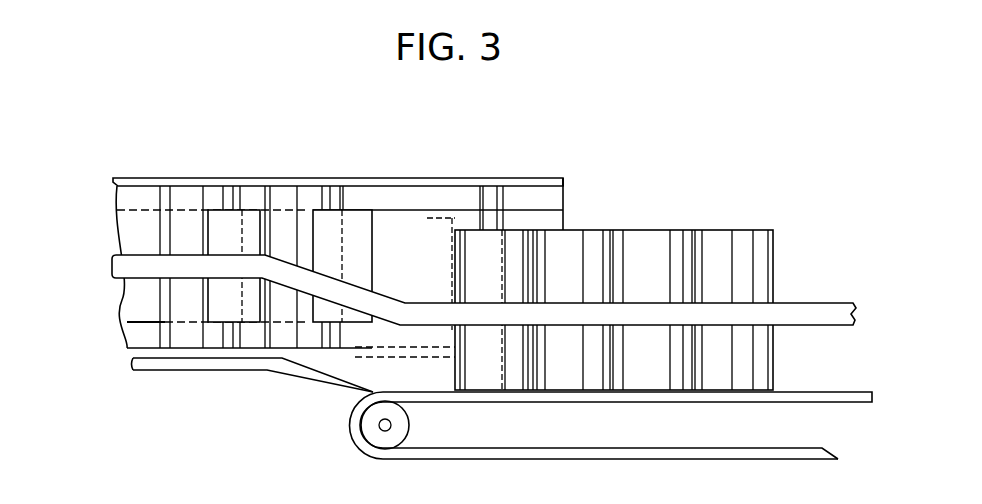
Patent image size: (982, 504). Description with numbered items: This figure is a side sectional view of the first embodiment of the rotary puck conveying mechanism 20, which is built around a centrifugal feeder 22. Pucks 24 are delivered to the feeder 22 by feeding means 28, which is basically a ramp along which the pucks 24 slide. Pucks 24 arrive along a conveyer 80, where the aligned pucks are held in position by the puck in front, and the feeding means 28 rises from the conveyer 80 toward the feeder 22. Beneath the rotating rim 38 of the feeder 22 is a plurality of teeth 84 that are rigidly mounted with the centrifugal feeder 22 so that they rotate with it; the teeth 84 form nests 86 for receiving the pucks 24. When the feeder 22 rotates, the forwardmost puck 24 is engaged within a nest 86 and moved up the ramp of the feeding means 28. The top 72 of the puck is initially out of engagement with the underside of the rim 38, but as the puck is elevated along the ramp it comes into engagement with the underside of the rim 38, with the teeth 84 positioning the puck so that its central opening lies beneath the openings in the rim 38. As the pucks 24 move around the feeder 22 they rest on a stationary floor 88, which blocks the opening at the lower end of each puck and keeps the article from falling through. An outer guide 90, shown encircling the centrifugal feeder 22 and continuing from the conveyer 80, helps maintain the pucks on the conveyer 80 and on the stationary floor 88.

The rotary conveying mechanism 20 is at (621, 133).
The centrifugal feeder 22 is at (240, 162).
The pucks 24 is at (720, 243).
The feeding means 28 is at (309, 400).
The rim 38 is at (443, 178).
The top 72 is at (740, 230).
The conveyer 80 is at (830, 397).
The teeth 84 is at (215, 235).
The nest 86 is at (526, 182).
The stationary floor 88 is at (137, 351).
The outer guide 90 is at (825, 312).